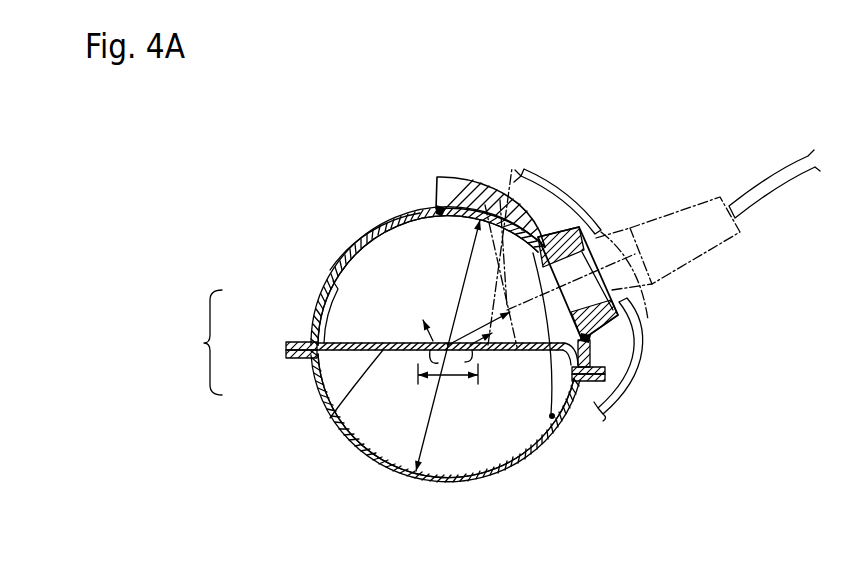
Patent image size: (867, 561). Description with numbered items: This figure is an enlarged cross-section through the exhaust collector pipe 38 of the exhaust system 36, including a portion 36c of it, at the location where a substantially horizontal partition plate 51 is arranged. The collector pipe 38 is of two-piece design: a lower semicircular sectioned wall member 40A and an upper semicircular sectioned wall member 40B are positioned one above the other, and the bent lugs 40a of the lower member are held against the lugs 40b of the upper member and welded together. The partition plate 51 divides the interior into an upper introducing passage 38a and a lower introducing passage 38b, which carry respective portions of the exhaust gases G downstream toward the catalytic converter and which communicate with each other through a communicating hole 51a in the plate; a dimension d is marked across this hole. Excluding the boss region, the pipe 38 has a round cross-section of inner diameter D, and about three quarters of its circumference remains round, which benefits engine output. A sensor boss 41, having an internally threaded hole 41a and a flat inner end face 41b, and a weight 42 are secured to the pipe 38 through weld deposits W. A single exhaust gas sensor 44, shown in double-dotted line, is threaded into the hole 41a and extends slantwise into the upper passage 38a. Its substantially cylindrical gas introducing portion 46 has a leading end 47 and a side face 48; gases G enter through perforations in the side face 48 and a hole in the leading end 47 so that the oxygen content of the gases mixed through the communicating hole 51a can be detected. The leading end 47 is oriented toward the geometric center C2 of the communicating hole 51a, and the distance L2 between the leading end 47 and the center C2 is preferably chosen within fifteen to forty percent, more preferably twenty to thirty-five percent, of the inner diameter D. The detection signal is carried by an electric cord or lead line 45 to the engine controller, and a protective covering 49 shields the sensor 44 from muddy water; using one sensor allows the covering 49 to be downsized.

The exhaust system 36 is at (372, 228).
The tube step portion 36c is at (335, 283).
The exhaust collector pipe 38 is at (373, 347).
The upper introducing passage 38a is at (408, 243).
The lower introducing passage 38b is at (495, 440).
The semicircular sectioned wall member 40A is at (316, 381).
The upper semicircular sectioned wall member 40B is at (314, 304).
The lugs 40a is at (588, 383).
The lugs 40b is at (590, 350).
The sensor boss 41 is at (540, 236).
The internally threaded hole 41a is at (545, 267).
The inner end face 41b is at (555, 414).
The weight 42 is at (440, 177).
The exhaust gas sensor 44 is at (652, 285).
The electric cord 45 is at (768, 192).
The gas introducing portion 46 is at (500, 200).
The leading end 47 is at (511, 340).
The side face 48 is at (485, 205).
The protective covering 49 is at (642, 380).
The partition plate 51 is at (330, 418).
The communicating hole 51a is at (440, 351).
The weld deposits W is at (437, 207).
The inner diameter D is at (462, 287).
The geometric center of the communicating hole C2 is at (447, 343).
The distance L2 is at (497, 322).
The exhaust gases G is at (415, 315).
The opening width d is at (450, 378).